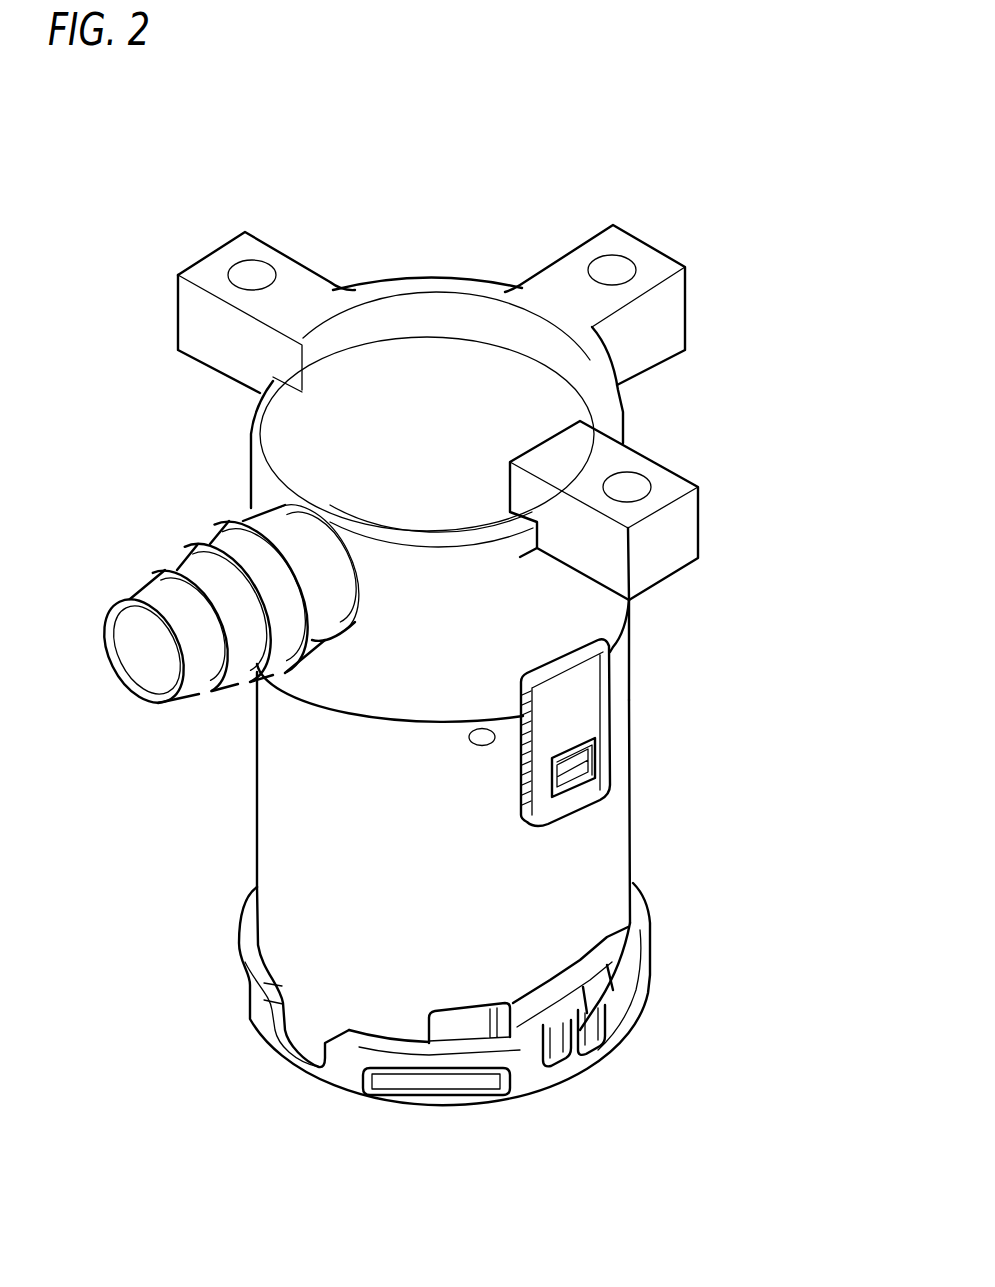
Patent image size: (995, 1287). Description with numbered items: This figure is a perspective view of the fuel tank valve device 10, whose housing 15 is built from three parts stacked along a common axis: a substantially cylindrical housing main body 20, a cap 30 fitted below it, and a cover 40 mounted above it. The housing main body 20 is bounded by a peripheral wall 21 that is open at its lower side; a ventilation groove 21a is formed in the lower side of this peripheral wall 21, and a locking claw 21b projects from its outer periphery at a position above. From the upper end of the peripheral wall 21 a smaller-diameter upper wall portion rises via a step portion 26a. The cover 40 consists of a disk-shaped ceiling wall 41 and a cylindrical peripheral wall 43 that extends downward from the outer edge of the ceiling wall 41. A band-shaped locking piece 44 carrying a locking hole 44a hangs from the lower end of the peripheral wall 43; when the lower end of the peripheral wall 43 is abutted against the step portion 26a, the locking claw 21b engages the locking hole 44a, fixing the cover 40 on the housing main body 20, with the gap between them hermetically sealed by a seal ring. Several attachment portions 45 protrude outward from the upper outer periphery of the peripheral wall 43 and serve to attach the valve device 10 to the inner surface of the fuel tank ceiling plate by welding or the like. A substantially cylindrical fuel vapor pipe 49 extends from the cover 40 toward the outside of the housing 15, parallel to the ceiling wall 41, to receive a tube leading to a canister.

The fuel tank valve device 10 is at (432, 264).
The housing 15 is at (117, 745).
The housing main body 20 is at (241, 825).
The peripheral wall 21 is at (608, 842).
The ventilation groove 21a is at (452, 1023).
The locking claw 21b is at (582, 787).
The step portion 26a is at (613, 651).
The cap 30 is at (245, 1002).
The cover 40 is at (195, 714).
The ceiling wall 41 is at (296, 433).
The peripheral wall 43 is at (600, 608).
The locking piece 44 is at (595, 692).
The locking hole 44a is at (600, 755).
The attachment portion 45 is at (217, 262).
The fuel vapor pipe 49 is at (143, 590).